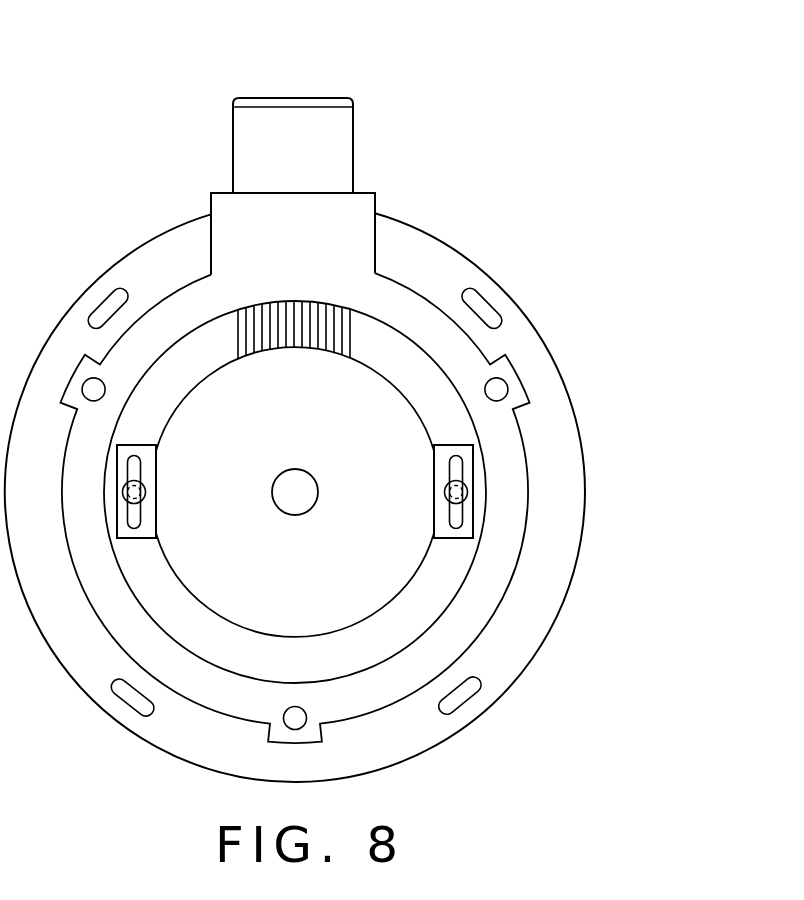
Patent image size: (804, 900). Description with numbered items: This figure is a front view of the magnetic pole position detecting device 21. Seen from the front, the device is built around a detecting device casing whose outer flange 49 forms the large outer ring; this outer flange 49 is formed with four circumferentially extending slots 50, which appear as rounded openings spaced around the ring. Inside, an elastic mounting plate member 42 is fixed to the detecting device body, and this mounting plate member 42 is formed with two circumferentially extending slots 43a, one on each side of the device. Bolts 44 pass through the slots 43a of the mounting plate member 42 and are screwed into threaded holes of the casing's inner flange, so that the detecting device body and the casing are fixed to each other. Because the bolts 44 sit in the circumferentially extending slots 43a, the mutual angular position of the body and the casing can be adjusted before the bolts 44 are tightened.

The magnetic pole position detecting device 21 is at (386, 92).
The elastic mounting plate member 42 is at (453, 445).
The slots 43a is at (452, 467).
The bolts 44 is at (447, 498).
The outer flange 49 is at (560, 577).
The slots 50 is at (468, 688).